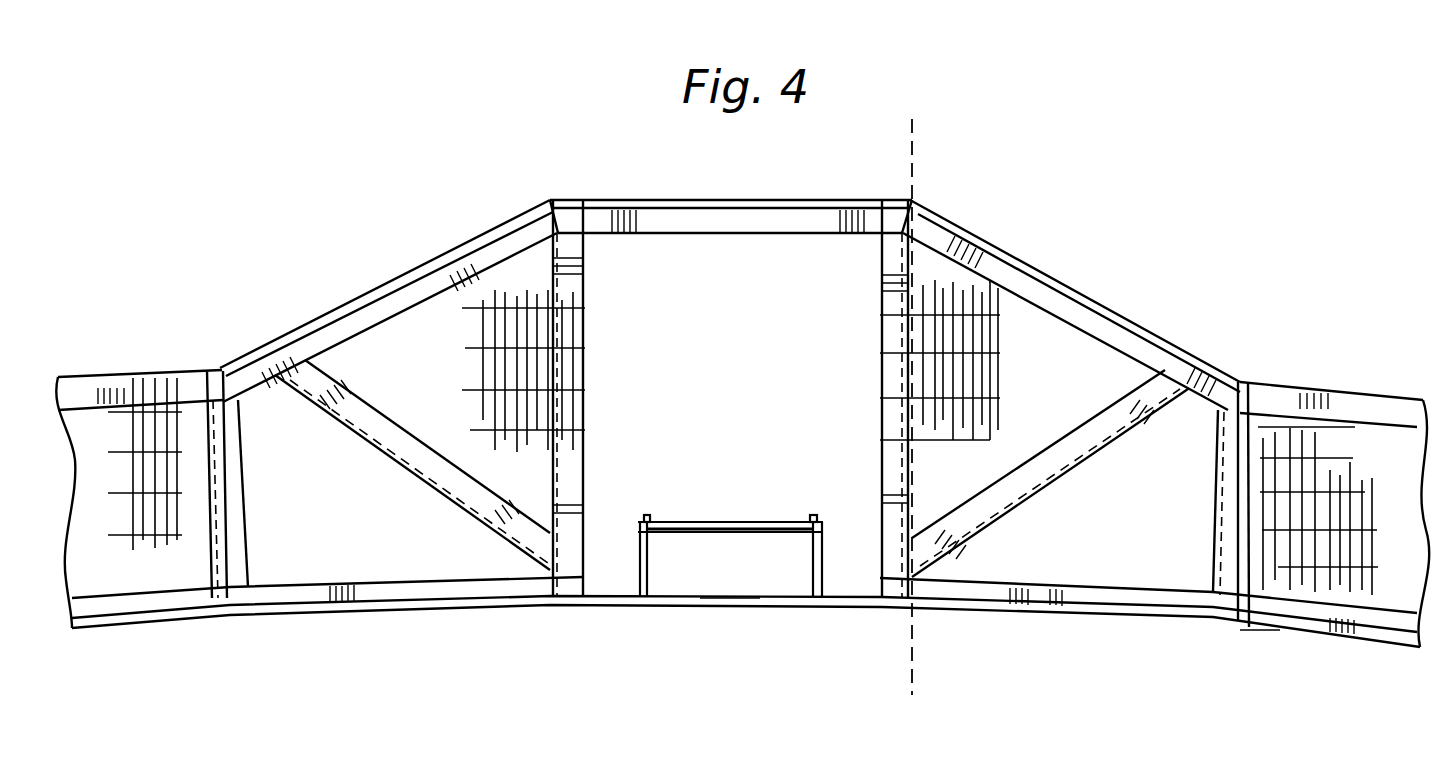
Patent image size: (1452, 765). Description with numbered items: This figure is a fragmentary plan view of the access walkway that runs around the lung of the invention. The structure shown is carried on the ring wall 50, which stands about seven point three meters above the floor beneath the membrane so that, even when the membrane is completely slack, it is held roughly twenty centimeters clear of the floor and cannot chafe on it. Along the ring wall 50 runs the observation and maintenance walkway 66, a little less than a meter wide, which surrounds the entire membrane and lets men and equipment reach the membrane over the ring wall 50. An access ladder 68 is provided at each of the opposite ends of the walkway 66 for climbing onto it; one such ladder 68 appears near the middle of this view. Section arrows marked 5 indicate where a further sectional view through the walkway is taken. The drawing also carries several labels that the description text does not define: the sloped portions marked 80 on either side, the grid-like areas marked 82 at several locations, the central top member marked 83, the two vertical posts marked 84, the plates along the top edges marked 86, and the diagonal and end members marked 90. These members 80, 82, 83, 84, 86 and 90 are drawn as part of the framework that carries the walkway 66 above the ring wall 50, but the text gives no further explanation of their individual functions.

The section line 5- 5 is at (877, 407).
The ring wall 50 is at (872, 607).
The observation and maintenance walkway 66 is at (382, 333).
The access ladder 68 is at (787, 488).
The sloped truss section 80 is at (420, 232).
The reinforcing mesh / grid 82 is at (135, 530).
The top center chord 83 is at (738, 250).
The center vertical post 84 is at (583, 272).
The top flange plate 86 is at (315, 320).
The diagonal brace / end post 90 is at (343, 428).